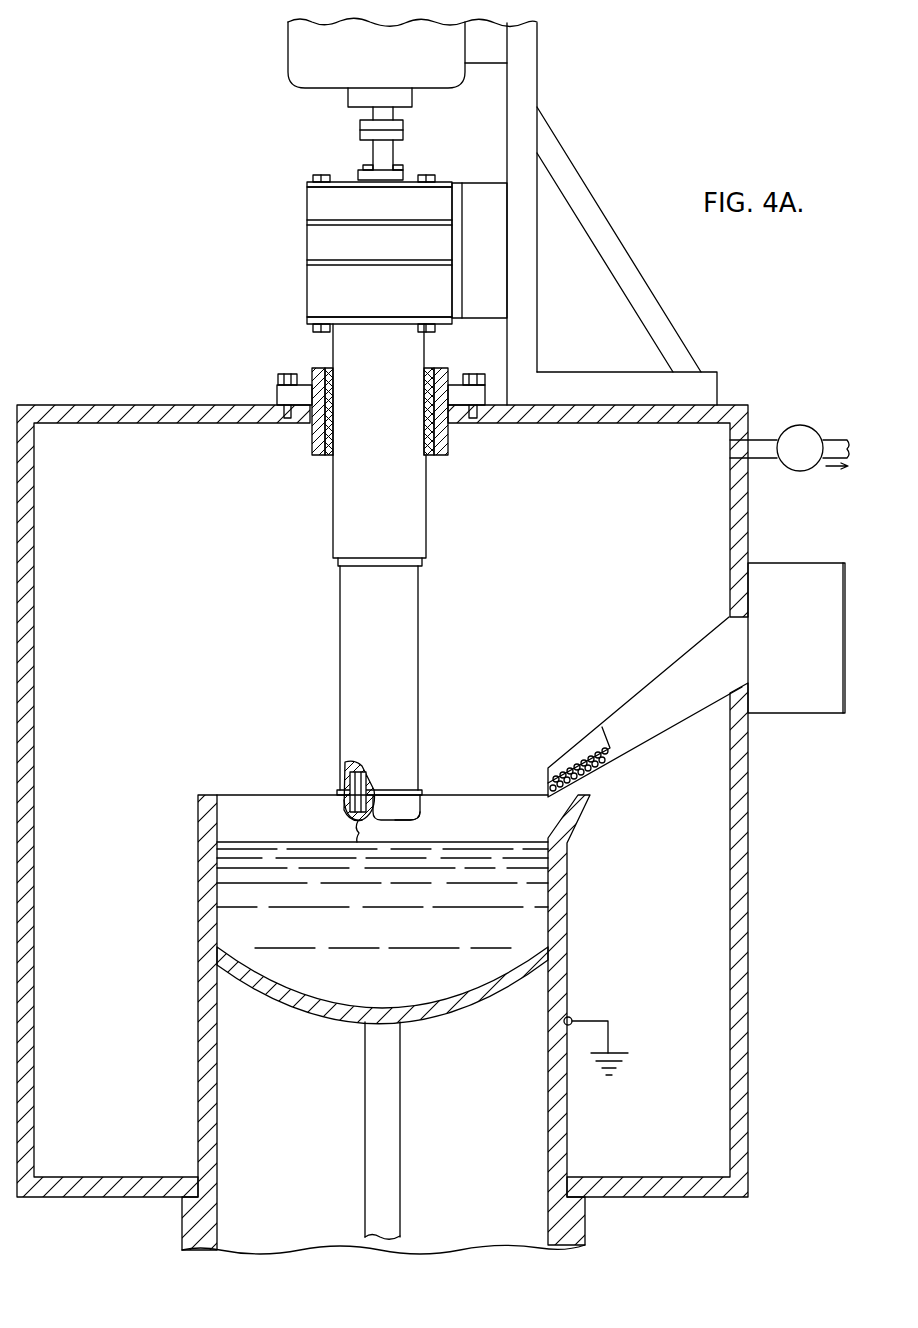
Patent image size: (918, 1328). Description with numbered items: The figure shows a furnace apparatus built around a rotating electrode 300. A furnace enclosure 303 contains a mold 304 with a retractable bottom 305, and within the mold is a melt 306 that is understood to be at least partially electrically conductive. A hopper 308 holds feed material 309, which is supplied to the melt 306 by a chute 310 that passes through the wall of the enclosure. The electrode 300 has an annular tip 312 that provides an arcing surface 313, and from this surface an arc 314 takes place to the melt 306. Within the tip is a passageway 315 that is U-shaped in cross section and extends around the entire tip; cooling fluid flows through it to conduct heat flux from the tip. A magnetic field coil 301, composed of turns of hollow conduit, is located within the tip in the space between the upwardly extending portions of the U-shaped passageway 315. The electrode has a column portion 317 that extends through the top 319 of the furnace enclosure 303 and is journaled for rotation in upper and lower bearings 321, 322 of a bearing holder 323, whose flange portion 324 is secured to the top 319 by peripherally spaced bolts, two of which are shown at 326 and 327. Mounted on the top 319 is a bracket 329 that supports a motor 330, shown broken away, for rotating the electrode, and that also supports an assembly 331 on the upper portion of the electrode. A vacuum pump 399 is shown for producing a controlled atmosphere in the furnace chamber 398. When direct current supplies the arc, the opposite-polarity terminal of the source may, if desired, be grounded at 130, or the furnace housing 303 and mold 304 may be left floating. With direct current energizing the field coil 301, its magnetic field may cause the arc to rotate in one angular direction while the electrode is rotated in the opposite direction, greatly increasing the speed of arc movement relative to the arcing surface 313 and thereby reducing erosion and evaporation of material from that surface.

The ground 130 is at (632, 1057).
The rotating electrode 300 is at (482, 656).
The field coil 301 is at (342, 778).
The furnace enclosure 303 is at (750, 932).
The mold 304 is at (563, 927).
The retractable bottom 305 is at (463, 1000).
The melt 306 is at (540, 884).
The hopper 308 is at (783, 570).
The feed material 309 is at (565, 770).
The chute 310 is at (668, 712).
The annular tip 312 is at (420, 805).
The arcing surface 313 is at (413, 817).
The arc 314 is at (362, 832).
The U-shaped passageway 315 is at (345, 814).
The column portion 317 is at (415, 525).
The top 319 is at (163, 408).
The upper bearing 321 is at (333, 372).
The lower bearing 322 is at (318, 455).
The bearing holder 323 is at (312, 437).
The flange portion 324 is at (277, 398).
The bolt 326 is at (278, 378).
The bolt 327 is at (470, 378).
The bracket 329 is at (527, 77).
The motor 330 is at (292, 44).
The assembly 331 is at (307, 203).
The furnace chamber 398 is at (207, 656).
The vacuum pump 399 is at (790, 428).